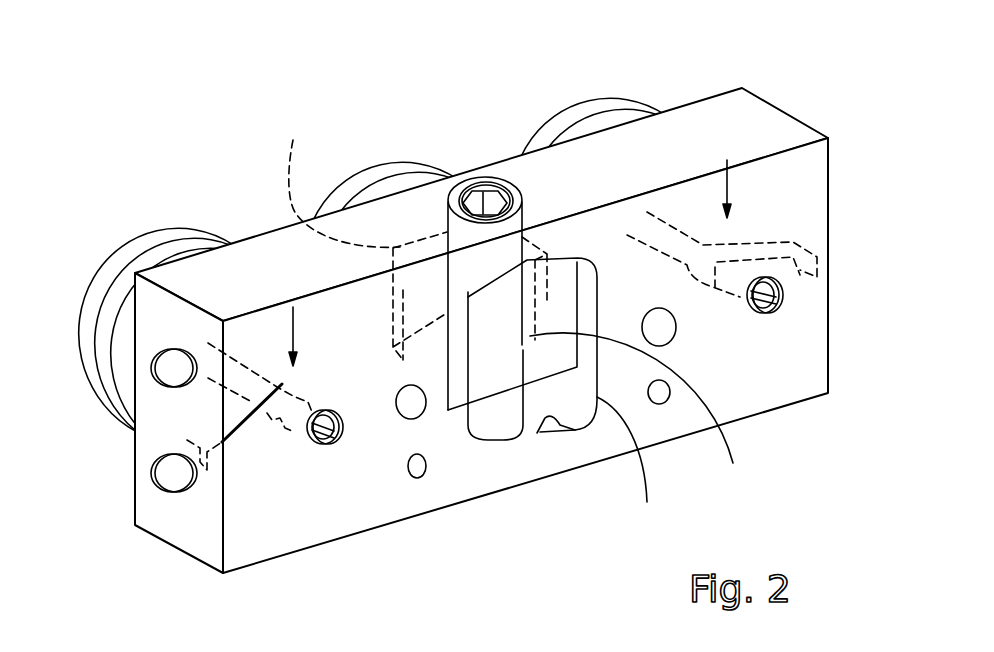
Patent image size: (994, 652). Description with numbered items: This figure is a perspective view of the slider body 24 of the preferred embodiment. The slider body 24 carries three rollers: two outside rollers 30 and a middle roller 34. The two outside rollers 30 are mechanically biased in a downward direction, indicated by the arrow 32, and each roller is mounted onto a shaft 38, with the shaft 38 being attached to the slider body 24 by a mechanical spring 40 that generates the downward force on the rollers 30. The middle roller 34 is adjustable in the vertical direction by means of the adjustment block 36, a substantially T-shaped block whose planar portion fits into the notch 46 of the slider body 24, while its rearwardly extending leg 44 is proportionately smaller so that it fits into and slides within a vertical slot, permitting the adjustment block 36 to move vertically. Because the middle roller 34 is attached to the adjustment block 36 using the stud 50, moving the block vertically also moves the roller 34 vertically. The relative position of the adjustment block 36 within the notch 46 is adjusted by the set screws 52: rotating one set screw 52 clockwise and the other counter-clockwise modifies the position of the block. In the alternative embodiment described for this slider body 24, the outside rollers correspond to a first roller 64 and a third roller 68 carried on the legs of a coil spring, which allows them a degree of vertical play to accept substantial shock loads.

The slider body 24 is at (760, 377).
The rollers 30 is at (182, 228).
The arrow 32 is at (293, 325).
The middle roller 34 is at (385, 163).
The adjustment block 36 is at (628, 468).
The shaft 38 is at (333, 443).
The mechanical spring 40 is at (557, 300).
The leg 44 is at (344, 176).
The notch 46 is at (563, 425).
The stud 50 is at (640, 418).
The set screws 52 is at (480, 205).
The first roller 64 is at (133, 250).
The third roller 68 is at (625, 107).